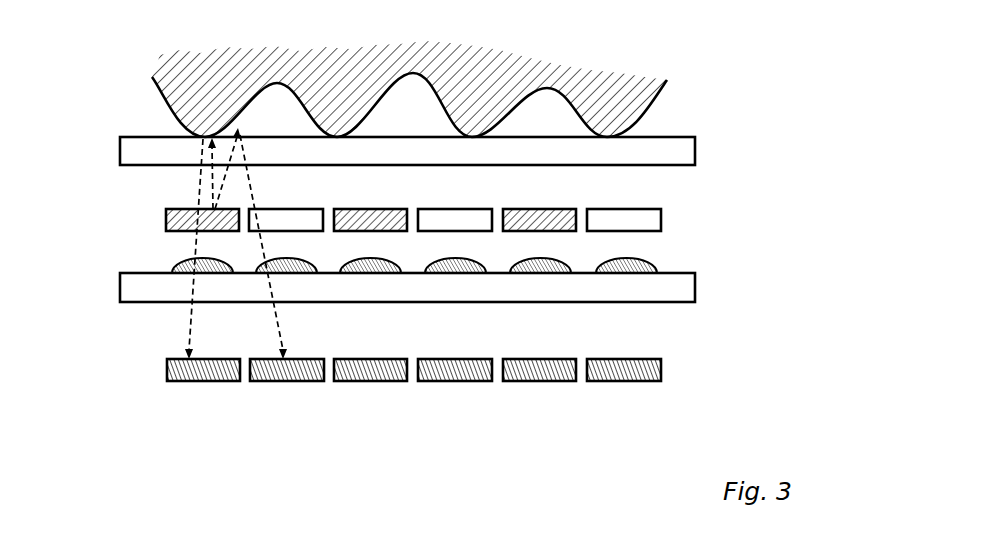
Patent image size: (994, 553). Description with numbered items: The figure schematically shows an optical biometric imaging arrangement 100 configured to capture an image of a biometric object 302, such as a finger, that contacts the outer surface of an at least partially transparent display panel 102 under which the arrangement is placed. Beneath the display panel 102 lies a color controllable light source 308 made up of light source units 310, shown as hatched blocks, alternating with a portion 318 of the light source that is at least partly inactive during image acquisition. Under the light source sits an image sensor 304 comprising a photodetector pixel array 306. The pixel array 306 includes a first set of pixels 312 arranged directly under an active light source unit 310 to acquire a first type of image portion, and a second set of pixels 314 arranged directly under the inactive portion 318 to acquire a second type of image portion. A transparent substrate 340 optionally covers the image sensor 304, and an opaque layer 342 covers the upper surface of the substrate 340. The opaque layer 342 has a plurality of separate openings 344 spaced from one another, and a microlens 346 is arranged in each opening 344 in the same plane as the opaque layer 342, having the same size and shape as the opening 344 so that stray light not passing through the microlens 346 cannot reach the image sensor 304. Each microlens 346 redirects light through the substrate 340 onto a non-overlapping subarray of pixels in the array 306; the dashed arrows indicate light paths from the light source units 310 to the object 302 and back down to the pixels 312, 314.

The optical biometric imaging arrangement 100 is at (105, 207).
The at least partially transparent display panel 102 is at (720, 150).
The object 302 is at (364, 98).
The image sensor 304 is at (488, 413).
The photodetector pixel array 306 is at (681, 327).
The color controllable light source 308 is at (430, 235).
The light source unit 310 is at (183, 210).
The first set of pixels 312 is at (203, 381).
The second set of pixels 314 is at (287, 381).
The portion of the color controllable light source 318 is at (302, 231).
The transparent substrate 340 is at (480, 185).
The opaque layer 342 is at (590, 253).
The opening 344 is at (455, 277).
The microlens 346 is at (626, 282).